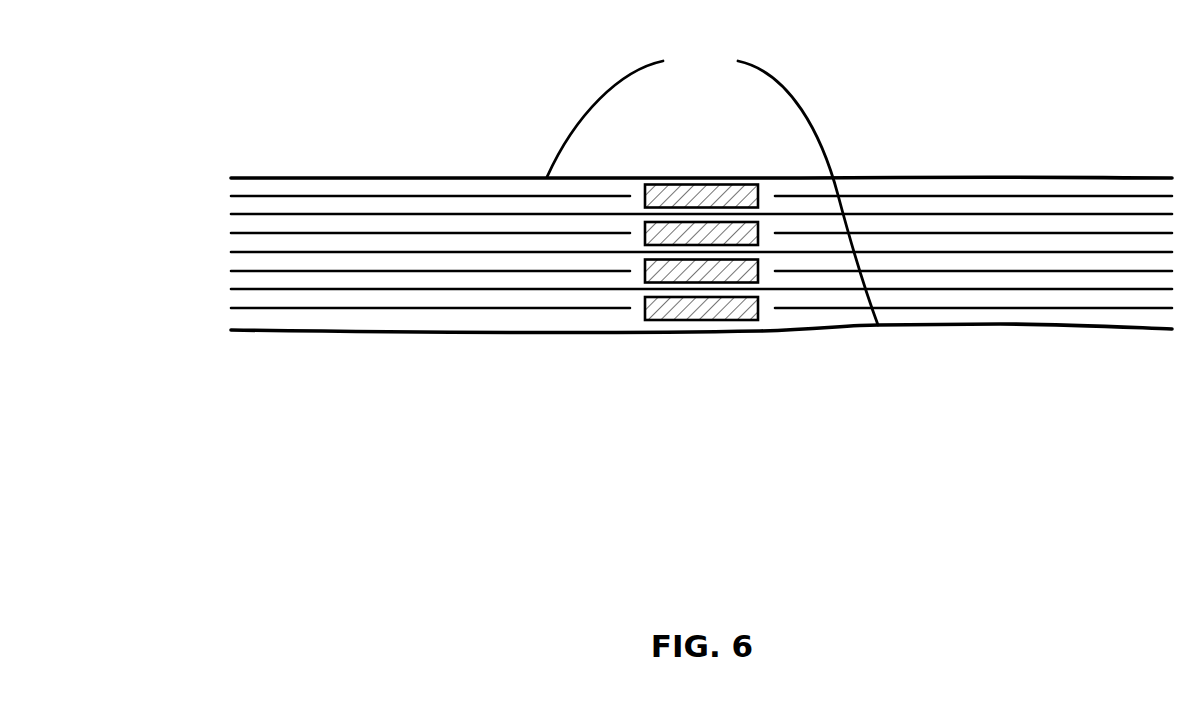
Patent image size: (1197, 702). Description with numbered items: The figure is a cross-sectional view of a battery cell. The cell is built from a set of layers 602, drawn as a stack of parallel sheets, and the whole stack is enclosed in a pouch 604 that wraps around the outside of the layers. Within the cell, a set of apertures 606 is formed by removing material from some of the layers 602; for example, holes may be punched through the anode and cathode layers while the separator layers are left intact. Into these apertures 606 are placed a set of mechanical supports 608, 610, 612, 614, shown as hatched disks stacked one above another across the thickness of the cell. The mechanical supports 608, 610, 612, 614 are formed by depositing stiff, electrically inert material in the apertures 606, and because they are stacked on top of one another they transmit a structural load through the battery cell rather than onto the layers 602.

The layers 602 is at (197, 327).
The pouch 604 is at (712, 181).
The apertures 606 is at (777, 458).
The mechanical support 608 is at (740, 197).
The mechanical support 610 is at (720, 235).
The mechanical support 612 is at (665, 272).
The mechanical support 614 is at (685, 310).